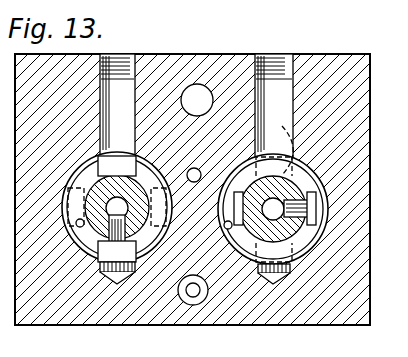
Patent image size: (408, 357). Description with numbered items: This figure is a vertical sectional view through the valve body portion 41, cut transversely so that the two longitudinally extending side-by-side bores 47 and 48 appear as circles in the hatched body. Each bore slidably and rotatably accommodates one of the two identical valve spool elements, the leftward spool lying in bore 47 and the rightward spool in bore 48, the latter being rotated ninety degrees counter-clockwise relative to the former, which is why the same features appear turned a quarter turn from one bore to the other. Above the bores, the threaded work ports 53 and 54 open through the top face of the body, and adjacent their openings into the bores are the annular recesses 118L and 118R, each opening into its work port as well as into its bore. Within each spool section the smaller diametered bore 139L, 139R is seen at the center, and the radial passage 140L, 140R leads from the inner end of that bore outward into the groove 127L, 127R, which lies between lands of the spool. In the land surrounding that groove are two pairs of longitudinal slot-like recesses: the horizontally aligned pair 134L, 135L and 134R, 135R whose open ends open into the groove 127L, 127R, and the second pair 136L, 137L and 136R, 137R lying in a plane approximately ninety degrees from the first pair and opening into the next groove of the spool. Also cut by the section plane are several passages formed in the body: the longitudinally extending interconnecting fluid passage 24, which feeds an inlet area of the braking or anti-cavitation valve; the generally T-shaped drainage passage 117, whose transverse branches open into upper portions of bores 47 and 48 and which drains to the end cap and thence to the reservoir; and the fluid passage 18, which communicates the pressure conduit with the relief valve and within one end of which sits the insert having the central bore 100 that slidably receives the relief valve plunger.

The valve body portion 41 is at (204, 46).
The work port 53 is at (122, 56).
The work port 54 is at (266, 56).
The interconnecting fluid passage 24 is at (202, 83).
The drainage passage 117 is at (191, 182).
The central bore 100 is at (178, 291).
The fluid passage 18 is at (205, 293).
The bore 47 is at (87, 174).
The bore 48 is at (243, 177).
The annular recess 118L is at (150, 168).
The annular recess 118R is at (314, 175).
The smaller diametered bore 139L is at (137, 207).
The smaller diametered bore 139R is at (293, 209).
The radial passage 140L is at (125, 232).
The radial passage 140R is at (305, 212).
The slot-like recess 134L is at (108, 156).
The slot-like recess 134R is at (232, 241).
The slot-like recess 135L is at (98, 278).
The slot-like recess 135R is at (322, 186).
The slot-like recess 136L is at (72, 219).
The slot-like recess 136R is at (291, 277).
The slot-like recess 137L is at (168, 212).
The slot-like recess 137R is at (291, 133).
The groove 127L is at (75, 250).
The groove 127R is at (307, 245).